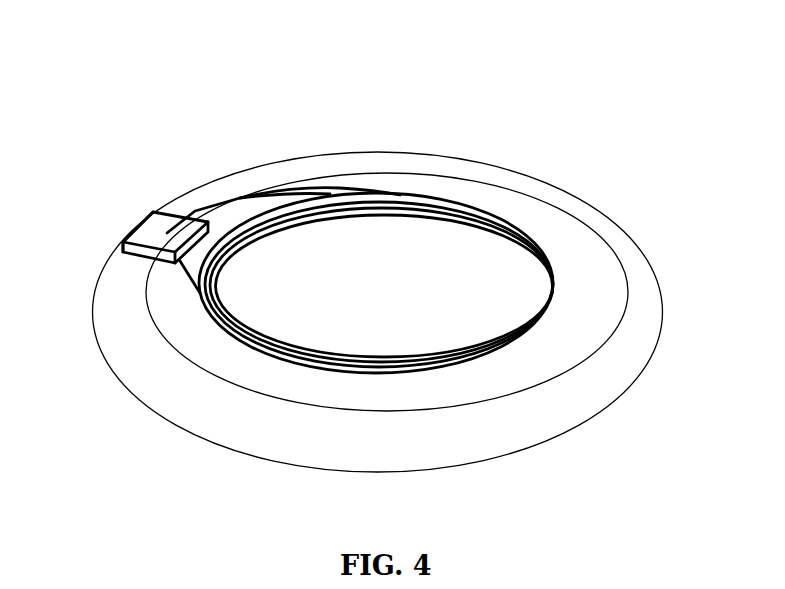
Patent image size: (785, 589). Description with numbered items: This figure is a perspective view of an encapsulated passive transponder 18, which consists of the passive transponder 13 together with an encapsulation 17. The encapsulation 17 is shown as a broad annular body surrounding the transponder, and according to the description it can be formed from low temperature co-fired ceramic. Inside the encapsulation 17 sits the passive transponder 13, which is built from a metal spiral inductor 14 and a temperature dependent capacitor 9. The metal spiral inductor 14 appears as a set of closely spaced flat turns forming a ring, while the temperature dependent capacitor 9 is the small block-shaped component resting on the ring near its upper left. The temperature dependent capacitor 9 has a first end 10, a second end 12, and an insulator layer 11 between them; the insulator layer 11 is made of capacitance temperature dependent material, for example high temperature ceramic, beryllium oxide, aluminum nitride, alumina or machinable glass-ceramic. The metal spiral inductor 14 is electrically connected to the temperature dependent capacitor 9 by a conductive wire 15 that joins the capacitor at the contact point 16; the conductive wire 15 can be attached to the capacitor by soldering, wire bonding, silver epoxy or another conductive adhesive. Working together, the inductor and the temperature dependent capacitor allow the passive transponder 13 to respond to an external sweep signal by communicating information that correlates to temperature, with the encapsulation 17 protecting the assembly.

The temperature dependent capacitor 9 is at (118, 242).
The first end 10 is at (152, 231).
The insulator layer 11 is at (123, 247).
The second end 12 is at (142, 258).
The passive transponder 13 is at (547, 235).
The metal spiral inductor 14 is at (320, 363).
The conductive wire 15 is at (240, 198).
The contact point 16 is at (167, 232).
The encapsulation 17 is at (622, 352).
The encapsulated passive transponder 18 is at (528, 158).